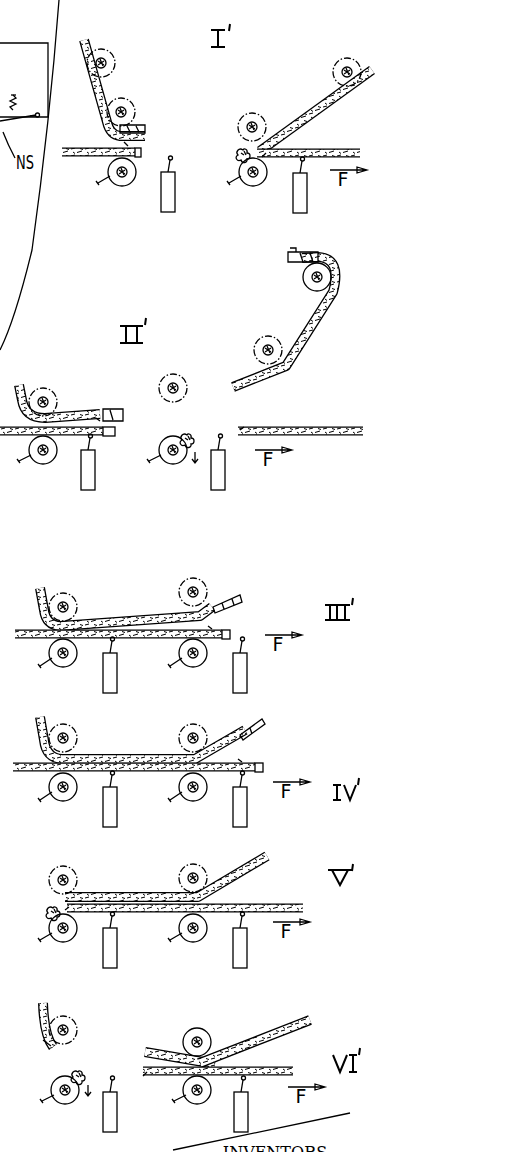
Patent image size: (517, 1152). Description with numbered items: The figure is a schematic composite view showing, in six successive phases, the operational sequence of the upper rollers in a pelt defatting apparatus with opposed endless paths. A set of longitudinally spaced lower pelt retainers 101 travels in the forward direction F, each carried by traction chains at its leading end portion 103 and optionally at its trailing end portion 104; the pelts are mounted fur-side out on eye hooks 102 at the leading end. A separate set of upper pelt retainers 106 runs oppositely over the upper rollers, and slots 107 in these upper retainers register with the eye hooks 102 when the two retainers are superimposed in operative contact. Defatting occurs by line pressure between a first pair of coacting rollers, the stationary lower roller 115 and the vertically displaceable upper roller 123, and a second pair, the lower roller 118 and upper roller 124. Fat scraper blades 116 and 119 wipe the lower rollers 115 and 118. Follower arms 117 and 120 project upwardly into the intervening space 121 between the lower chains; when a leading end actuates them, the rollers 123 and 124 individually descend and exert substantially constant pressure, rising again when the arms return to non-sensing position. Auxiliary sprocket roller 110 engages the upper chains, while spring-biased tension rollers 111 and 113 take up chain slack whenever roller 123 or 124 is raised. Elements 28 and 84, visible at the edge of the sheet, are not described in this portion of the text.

The contact 28 is at (12, 122).
The spring 84 is at (13, 95).
The lower pelt retainer 101 is at (92, 148).
The eye hook 102 is at (128, 143).
The leading end portion 103 is at (140, 150).
The trailing end portion 104 is at (264, 160).
The upper pelt retainer 106 is at (95, 100).
The slot 107 is at (143, 125).
The auxiliary sprocket roller 110 is at (305, 283).
The tension roller 111 is at (110, 50).
The tension roller 113 is at (338, 62).
The lower roller 115 is at (125, 186).
The fat scraper blade 116 is at (97, 183).
The follower arm 117 is at (162, 172).
The lower roller 118 is at (250, 186).
The fat scraper blade 119 is at (230, 186).
The follower arm 120 is at (310, 170).
The intervening space 121 is at (190, 152).
The upper roller 123 is at (132, 100).
The upper roller 124 is at (258, 112).